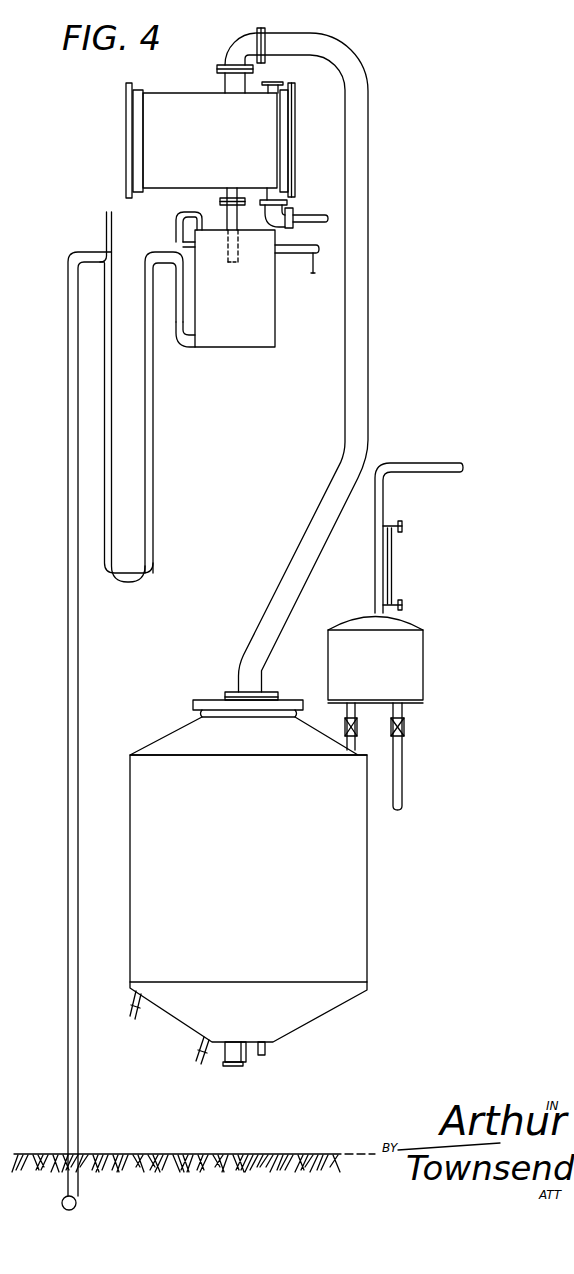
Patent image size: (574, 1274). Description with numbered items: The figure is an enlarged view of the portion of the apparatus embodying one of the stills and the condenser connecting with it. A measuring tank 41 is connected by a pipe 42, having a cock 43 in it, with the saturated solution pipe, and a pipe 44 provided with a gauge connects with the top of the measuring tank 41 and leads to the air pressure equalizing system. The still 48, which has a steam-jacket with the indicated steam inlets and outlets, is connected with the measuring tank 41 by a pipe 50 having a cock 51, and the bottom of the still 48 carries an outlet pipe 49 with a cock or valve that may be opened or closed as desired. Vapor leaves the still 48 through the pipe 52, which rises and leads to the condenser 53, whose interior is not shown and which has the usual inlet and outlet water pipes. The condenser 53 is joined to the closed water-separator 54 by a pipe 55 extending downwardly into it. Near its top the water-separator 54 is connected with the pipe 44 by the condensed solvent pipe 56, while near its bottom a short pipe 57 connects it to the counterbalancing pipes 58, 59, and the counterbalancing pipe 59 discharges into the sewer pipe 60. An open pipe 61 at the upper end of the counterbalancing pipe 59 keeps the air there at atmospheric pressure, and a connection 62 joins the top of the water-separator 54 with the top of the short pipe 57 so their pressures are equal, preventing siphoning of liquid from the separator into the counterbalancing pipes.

The measuring tank 41 is at (375, 660).
The pipe 42 is at (402, 778).
The cock 43 is at (404, 725).
The pipe 44 is at (383, 505).
The still 48 is at (248, 878).
The outlet pipe 49 is at (233, 1068).
The pipe 50 is at (355, 745).
The cock 51 is at (345, 722).
The pipe 52 is at (368, 360).
The condenser 53 is at (210, 140).
The water-separator 54 is at (261, 267).
The pipe 55 is at (221, 208).
The condensed solvent pipe 56 is at (301, 275).
The short pipe 57 is at (184, 348).
The counterbalancing pipe 58 is at (153, 453).
The counterbalancing pipe 59 is at (108, 427).
The sewer pipe 60 is at (68, 525).
The open pipe 61 is at (106, 227).
The connection 62 is at (176, 221).